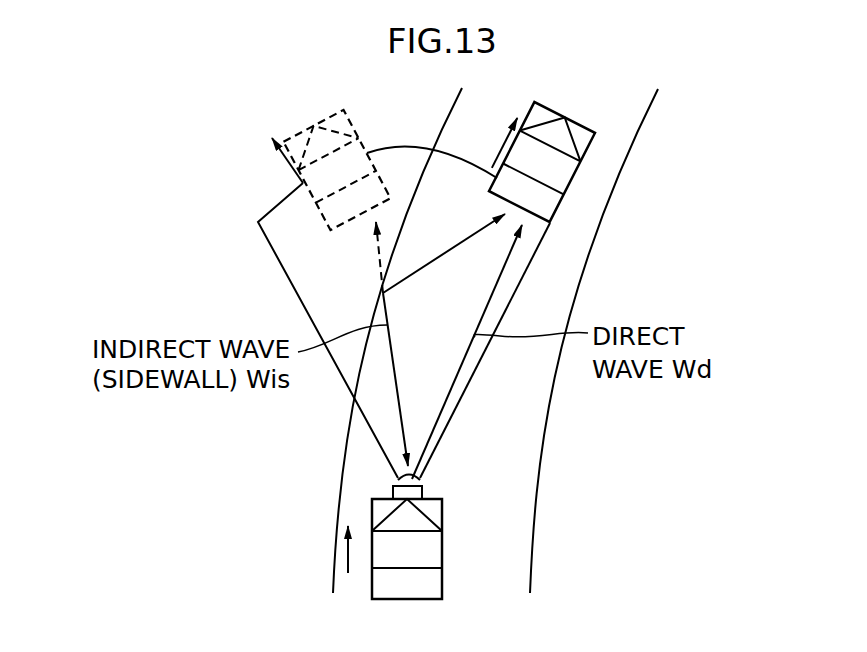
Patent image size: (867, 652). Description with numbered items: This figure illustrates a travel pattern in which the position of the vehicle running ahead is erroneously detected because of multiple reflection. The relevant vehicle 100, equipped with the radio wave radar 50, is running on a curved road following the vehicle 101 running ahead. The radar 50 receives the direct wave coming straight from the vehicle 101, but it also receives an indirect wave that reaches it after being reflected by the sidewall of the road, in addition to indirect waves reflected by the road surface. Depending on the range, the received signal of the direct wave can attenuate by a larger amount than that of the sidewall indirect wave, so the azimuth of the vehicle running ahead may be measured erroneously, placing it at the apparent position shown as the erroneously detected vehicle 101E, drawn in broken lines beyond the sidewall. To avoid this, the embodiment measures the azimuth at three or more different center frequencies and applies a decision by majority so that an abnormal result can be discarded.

The radio wave radar 50 is at (422, 492).
The relevant vehicle 100 is at (443, 547).
The vehicle running ahead 101 is at (576, 173).
The erroneously detected vehicle 101E is at (312, 198).